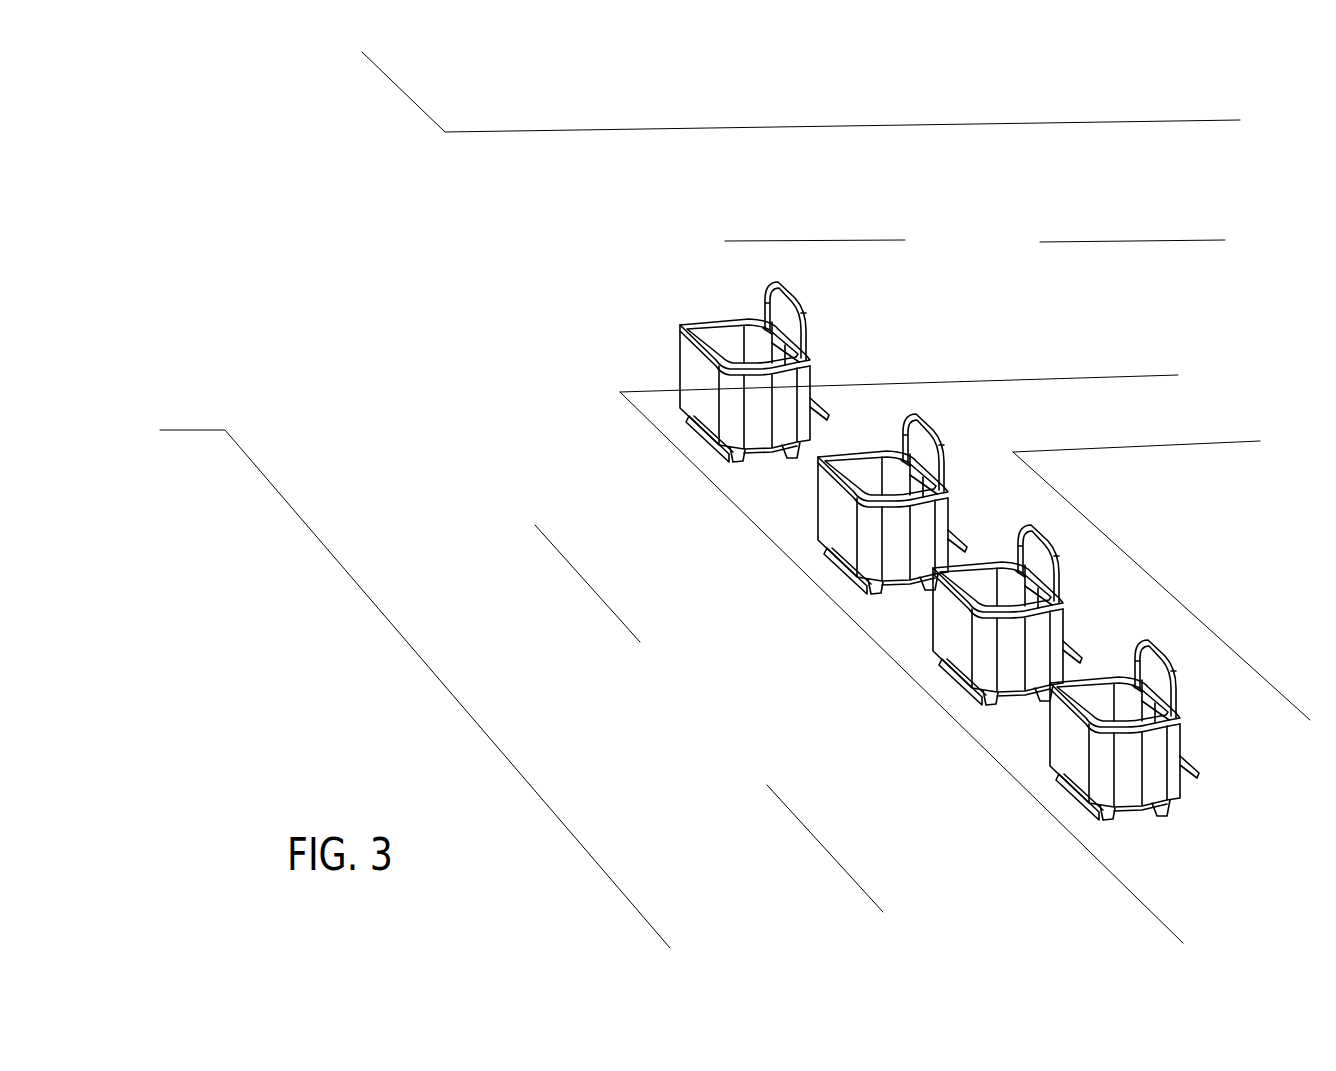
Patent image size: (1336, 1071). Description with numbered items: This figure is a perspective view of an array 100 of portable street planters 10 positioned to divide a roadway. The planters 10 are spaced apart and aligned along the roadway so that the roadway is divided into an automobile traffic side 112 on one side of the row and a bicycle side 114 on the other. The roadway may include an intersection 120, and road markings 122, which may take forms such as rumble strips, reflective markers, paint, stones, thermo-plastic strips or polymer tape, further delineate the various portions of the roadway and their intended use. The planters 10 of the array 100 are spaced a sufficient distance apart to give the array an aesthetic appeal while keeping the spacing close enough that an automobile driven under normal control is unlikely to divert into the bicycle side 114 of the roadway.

The portable street planter 10 is at (693, 375).
The array of street planters 100 is at (701, 263).
The automobile traffic side 112 is at (655, 586).
The bicycle side 114 is at (1098, 583).
The intersection 120 is at (401, 205).
The road markings 122 is at (562, 558).